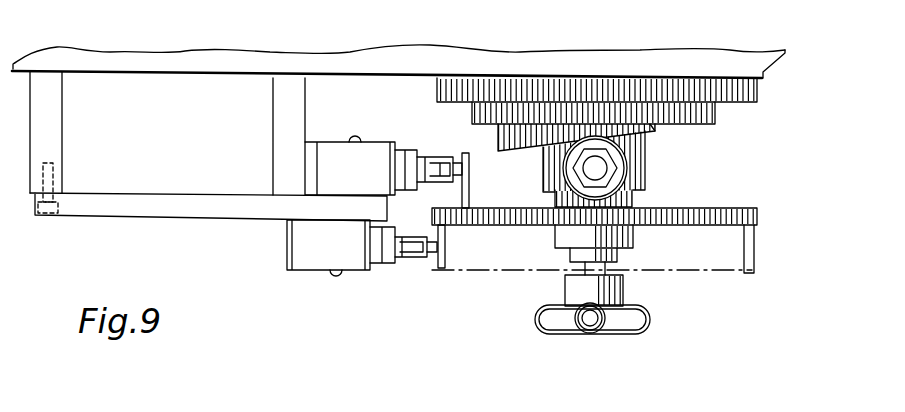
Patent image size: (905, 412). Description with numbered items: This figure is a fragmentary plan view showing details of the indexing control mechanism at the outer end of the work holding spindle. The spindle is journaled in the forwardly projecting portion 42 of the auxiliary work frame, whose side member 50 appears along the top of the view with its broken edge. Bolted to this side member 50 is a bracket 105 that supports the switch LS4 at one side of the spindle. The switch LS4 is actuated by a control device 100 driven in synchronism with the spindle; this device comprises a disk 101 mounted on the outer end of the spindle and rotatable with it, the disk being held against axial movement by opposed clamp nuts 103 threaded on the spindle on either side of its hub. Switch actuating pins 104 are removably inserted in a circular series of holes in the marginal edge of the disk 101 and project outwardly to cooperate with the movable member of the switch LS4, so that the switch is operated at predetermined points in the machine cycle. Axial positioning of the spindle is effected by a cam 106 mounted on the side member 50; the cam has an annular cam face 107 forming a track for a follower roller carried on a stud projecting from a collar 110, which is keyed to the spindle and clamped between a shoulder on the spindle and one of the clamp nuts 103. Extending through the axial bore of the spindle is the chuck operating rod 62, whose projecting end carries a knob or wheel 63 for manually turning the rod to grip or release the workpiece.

The side member 50 is at (610, 55).
The forwardly projecting portion 42 is at (782, 76).
The cam 106 is at (522, 142).
The collar 110 is at (551, 174).
The annular cam face 107 is at (665, 136).
The clamp nuts 103 is at (633, 205).
The disk 101 is at (690, 208).
The bracket 105 is at (255, 213).
The switch LS4 is at (303, 265).
The switch actuating pins 104 is at (446, 269).
The rod 62 is at (597, 272).
The control device 100 is at (683, 276).
The knob or wheel 63 is at (645, 326).